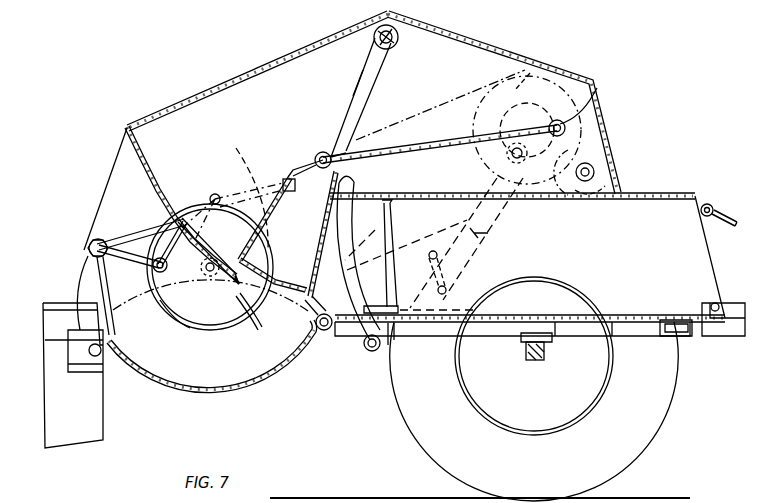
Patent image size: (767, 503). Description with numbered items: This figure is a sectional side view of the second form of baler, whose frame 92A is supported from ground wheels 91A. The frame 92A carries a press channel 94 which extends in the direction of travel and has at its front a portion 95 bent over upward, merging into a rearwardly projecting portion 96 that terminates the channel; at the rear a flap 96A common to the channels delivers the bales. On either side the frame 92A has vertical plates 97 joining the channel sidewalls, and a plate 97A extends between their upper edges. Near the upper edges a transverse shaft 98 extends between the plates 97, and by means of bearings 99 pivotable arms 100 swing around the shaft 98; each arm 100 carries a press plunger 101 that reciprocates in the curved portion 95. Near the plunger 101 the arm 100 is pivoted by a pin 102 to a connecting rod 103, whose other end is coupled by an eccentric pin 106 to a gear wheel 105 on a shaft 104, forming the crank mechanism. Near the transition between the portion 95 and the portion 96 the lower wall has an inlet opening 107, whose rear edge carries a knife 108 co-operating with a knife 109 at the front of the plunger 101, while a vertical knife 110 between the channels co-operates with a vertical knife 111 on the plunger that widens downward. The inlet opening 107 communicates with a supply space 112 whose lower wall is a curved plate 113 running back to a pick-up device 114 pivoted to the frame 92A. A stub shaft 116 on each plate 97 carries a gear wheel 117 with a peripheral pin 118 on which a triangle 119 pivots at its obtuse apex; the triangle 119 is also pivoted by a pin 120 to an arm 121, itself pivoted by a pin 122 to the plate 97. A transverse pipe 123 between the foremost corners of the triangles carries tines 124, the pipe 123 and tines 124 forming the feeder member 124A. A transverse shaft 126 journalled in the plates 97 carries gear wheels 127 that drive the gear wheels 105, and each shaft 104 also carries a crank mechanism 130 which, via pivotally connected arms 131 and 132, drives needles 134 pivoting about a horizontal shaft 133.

The ground wheels 91A is at (650, 445).
The frame 92A is at (618, 344).
The press channel 94 is at (693, 264).
The portion (bent front portion of press channel) 95 is at (150, 166).
The rearwardly projecting portion 96 is at (660, 196).
The flap 96A is at (716, 338).
The vertical plates 97 is at (312, 52).
The plate 97A is at (253, 68).
The shaft 98 is at (398, 46).
The bearings 99 is at (368, 50).
The pivotable arms 100 is at (350, 88).
The press plunger 101 is at (272, 210).
The pin 102 is at (318, 152).
The connecting rod 103 is at (410, 148).
The shaft 104 is at (548, 120).
The gear wheel 105 is at (600, 104).
The pin 106 is at (597, 97).
The inlet opening 107 is at (250, 322).
The knife 108 is at (322, 335).
The knife 109 is at (394, 337).
The vertical knife 110 is at (398, 192).
The vertical knives 111 is at (397, 214).
The supply space 112 is at (214, 373).
The curved plate 113 is at (245, 393).
The pick-up device 114 is at (98, 429).
The stub shaft 116 is at (198, 288).
The gear wheel 117 is at (172, 323).
The pin 118 is at (167, 266).
The triangle 119 is at (148, 224).
The pin 120 is at (213, 190).
The arm 121 is at (240, 160).
The pin 122 is at (284, 180).
The pipe 123 is at (90, 236).
The tines 124 is at (88, 250).
The feeder member 124A is at (92, 280).
The shaft 126 is at (598, 170).
The gear wheels 127 is at (606, 150).
The crank mechanism 130 is at (558, 73).
The arm 131 is at (488, 233).
The arm 132 is at (448, 308).
The horizontal shaft 133 is at (433, 251).
The needles 134 is at (366, 348).